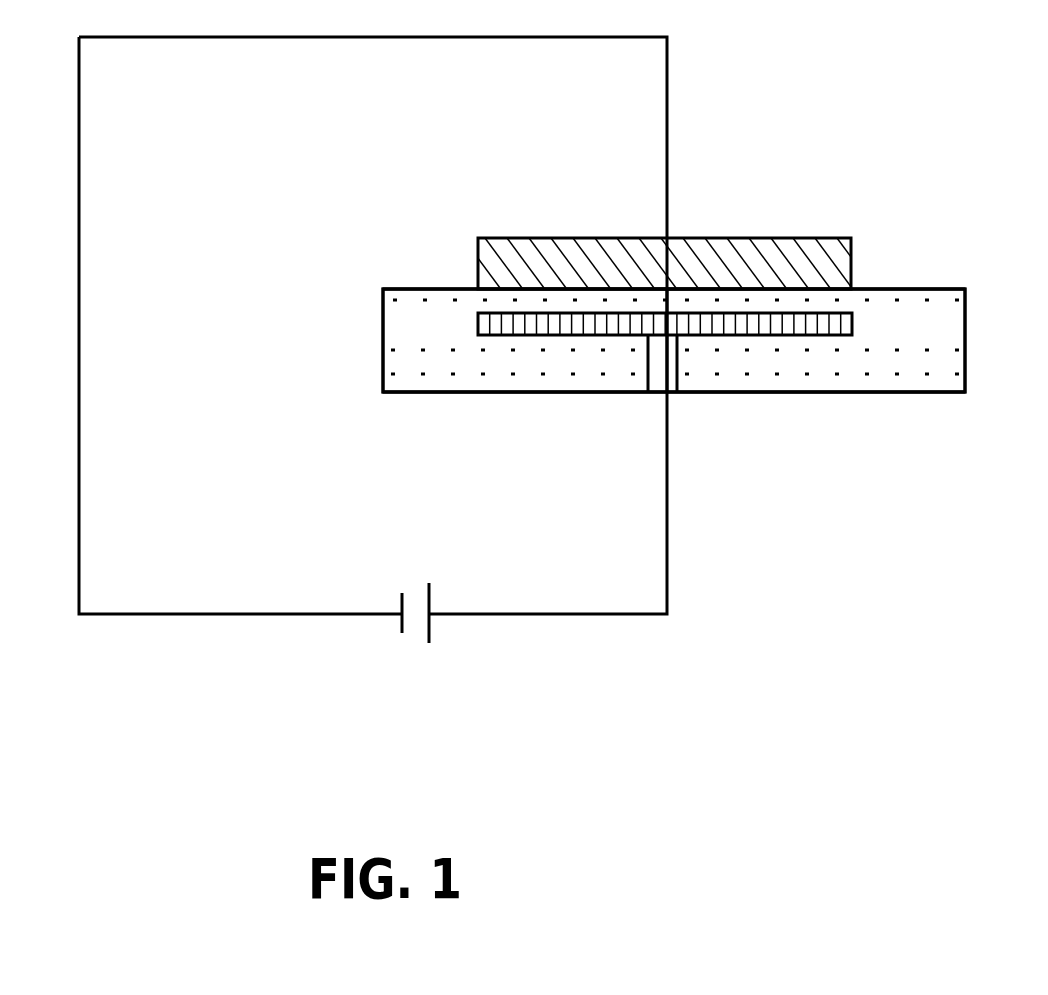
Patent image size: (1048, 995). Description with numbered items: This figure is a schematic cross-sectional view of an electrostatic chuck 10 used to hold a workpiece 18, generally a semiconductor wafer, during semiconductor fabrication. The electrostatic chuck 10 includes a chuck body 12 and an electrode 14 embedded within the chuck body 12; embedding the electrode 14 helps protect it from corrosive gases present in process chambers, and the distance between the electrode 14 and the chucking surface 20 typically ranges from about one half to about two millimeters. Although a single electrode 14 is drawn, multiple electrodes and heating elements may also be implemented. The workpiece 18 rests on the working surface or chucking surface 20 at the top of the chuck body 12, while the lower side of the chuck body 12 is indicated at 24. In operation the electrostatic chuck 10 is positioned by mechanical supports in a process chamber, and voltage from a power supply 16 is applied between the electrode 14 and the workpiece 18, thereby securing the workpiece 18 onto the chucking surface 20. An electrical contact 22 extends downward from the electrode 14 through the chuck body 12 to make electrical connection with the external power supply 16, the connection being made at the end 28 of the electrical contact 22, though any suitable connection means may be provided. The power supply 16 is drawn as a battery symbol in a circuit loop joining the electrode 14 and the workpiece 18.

The electrostatic chuck 10 is at (940, 303).
The chuck body 12 is at (925, 378).
The electrode 14 is at (858, 327).
The power supply 16 is at (401, 619).
The workpiece 18 is at (710, 239).
The chucking surface 20 is at (880, 289).
The electrical contact 22 is at (679, 366).
The lower surface 24 is at (785, 392).
The end 28 is at (659, 392).